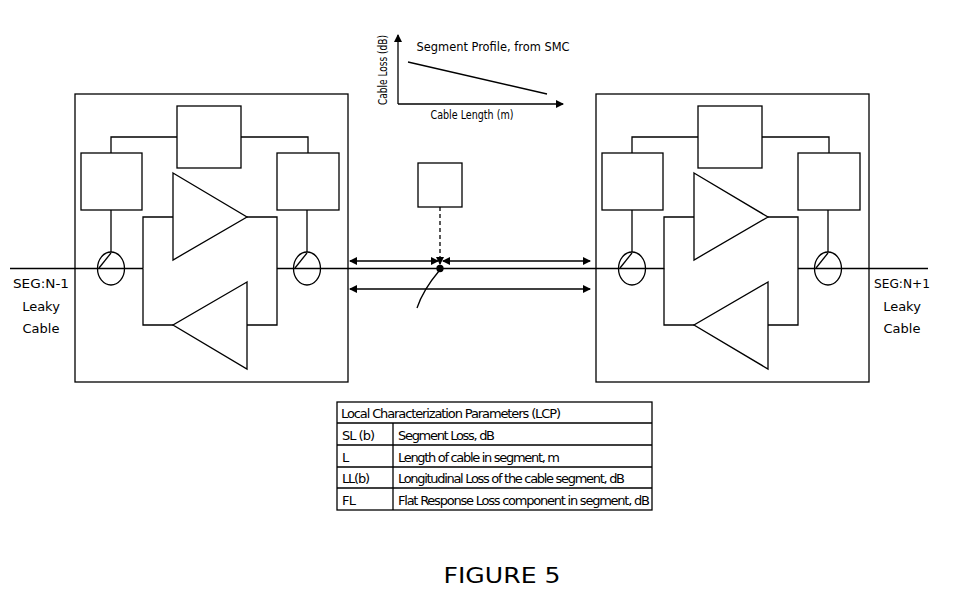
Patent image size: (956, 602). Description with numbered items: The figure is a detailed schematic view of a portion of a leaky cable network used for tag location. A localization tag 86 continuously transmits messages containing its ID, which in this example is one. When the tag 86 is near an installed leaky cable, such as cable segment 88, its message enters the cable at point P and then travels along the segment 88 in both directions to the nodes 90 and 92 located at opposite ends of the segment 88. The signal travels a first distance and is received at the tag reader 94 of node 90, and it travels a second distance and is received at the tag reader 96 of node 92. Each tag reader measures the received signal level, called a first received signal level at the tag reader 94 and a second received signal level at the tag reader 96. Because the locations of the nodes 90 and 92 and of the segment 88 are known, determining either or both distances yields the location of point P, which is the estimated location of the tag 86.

The node 92 is at (293, 94).
The node 90 is at (808, 94).
The tag reader 96 is at (339, 176).
The tag reader 94 is at (617, 172).
The localization tag 86 is at (462, 178).
The cable segment 88 is at (560, 268).